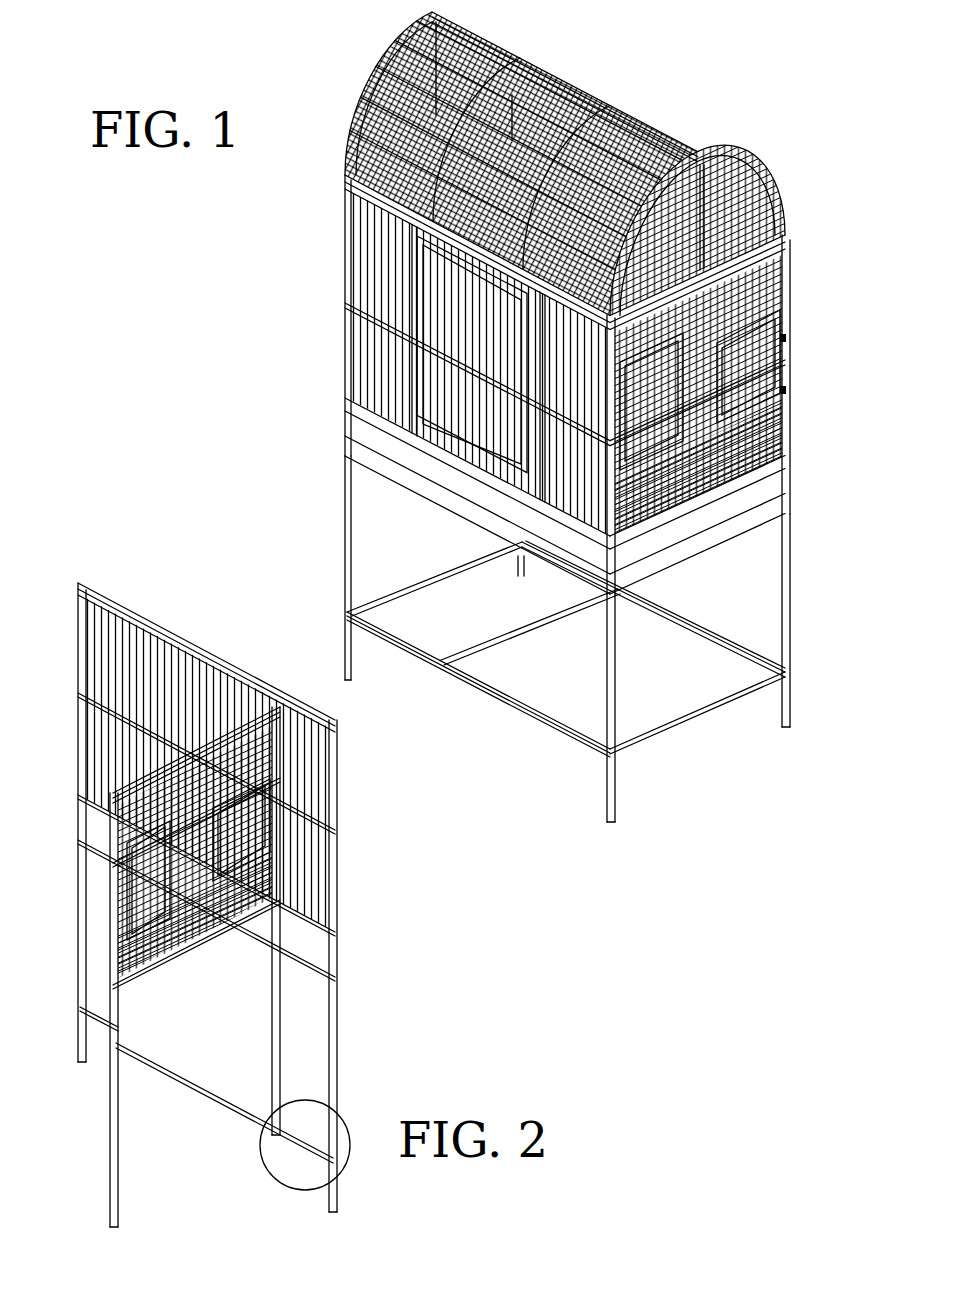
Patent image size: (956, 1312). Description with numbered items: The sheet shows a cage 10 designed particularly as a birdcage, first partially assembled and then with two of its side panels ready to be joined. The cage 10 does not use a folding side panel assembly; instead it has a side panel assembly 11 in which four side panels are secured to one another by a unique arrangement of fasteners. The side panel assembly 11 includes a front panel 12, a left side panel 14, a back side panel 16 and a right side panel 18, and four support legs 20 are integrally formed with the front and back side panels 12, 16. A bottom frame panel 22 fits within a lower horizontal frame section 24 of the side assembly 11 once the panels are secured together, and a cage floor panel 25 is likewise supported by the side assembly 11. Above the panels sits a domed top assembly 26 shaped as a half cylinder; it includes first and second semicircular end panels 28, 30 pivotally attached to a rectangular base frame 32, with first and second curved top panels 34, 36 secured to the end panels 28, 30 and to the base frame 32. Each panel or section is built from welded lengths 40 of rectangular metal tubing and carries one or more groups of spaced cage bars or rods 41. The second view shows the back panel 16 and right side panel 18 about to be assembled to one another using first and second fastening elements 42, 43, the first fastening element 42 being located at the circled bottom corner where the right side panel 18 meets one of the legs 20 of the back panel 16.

In FIG. 1, the cage 10 is at (287, 131).
In FIG. 1, the side panel assembly 11 is at (326, 381).
In FIG. 1, the front panel 12 is at (393, 325).
In FIG. 1, the left side panel 14 is at (342, 150).
In FIG. 1, the back side panel 16 is at (762, 185).
In FIG. 2, the back side panel 16 is at (337, 812).
In FIG. 1, the right side panel 18 is at (787, 338).
In FIG. 2, the right side panel 18 is at (122, 960).
In FIG. 1, the support legs 20 is at (337, 183).
In FIG. 1, the bottom frame panel 22 is at (340, 517).
In FIG. 1, the lower horizontal frame section 24 is at (518, 724).
In FIG. 1, the cage floor panel 25 is at (640, 455).
In FIG. 1, the domed top assembly 26 is at (528, 618).
In FIG. 1, the first semicircular end panel 28 is at (445, 55).
In FIG. 1, the second semicircular end panel 30 is at (733, 168).
In FIG. 1, the rectangular base frame 32 is at (382, 228).
In FIG. 1, the first curved top panel 34 is at (636, 90).
In FIG. 1, the second curved top panel 36 is at (445, 78).
In FIG. 1, the lengths of rectangular metal tubing 40 is at (786, 470).
In FIG. 1, the cage bars or rods 41 is at (447, 412).
In FIG. 2, the first fastening element 42 is at (316, 1128).
In FIG. 2, the second fastening element 43 is at (354, 727).